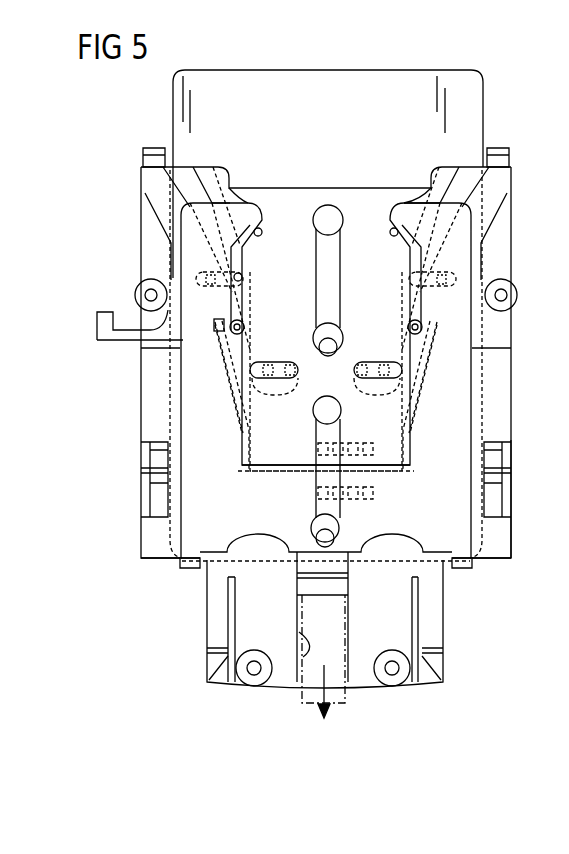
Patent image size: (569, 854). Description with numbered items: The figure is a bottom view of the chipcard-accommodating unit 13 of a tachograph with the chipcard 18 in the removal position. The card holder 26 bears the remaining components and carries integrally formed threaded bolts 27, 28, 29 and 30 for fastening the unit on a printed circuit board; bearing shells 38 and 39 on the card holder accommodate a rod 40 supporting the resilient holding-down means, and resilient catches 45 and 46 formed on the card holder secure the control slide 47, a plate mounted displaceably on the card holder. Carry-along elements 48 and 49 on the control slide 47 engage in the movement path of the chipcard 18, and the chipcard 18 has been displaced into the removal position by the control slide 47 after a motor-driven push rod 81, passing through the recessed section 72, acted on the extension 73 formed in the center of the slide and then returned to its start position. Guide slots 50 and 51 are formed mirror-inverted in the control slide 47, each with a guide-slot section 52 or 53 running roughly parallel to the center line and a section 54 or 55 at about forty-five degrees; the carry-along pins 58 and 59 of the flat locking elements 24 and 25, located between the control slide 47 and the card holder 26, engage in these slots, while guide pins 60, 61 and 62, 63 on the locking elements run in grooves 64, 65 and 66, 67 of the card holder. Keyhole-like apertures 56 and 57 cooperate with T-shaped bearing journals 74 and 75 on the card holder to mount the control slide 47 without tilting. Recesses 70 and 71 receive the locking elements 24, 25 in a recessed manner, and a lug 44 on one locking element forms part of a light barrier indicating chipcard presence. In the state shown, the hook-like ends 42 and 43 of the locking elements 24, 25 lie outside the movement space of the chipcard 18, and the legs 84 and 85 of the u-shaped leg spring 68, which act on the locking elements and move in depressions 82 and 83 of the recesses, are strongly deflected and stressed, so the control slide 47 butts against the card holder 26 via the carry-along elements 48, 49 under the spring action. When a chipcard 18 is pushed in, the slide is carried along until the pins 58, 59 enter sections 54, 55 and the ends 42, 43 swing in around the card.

The chipcard-accommodating unit 13 is at (103, 583).
The chipcard 18 is at (369, 113).
The locking element 24 is at (163, 188).
The locking element 25 is at (492, 192).
The card holder 26 is at (249, 195).
The threaded bolt 27 is at (137, 303).
The threaded bolt 28 is at (512, 300).
The threaded bolt 29 is at (390, 675).
The threaded bolt 30 is at (255, 675).
The bearing shell 38 is at (155, 505).
The bearing shell 39 is at (510, 520).
The rod 40 is at (505, 488).
The hook-like end 42 is at (152, 150).
The hook-like end 43 is at (500, 152).
The lug 44 is at (105, 333).
The catch 45 is at (218, 668).
The catch 46 is at (432, 668).
The control slide 47 is at (443, 494).
The carry-along element 48 is at (190, 568).
The carry-along element 49 is at (460, 568).
The guide slot 50 is at (262, 190).
The guide slot 51 is at (386, 196).
The guide-slot section 52 is at (218, 331).
The guide-slot section 53 is at (413, 276).
The guide-slot section 54 is at (263, 236).
The guide-slot section 55 is at (400, 244).
The keyhole-like aperture 56 is at (322, 205).
The keyhole-like aperture 57 is at (316, 478).
The carry-along pin 58 is at (245, 327).
The carry-along pin 59 is at (407, 320).
The guide pin 60 is at (214, 262).
The guide pin 61 is at (270, 379).
The guide pin 62 is at (427, 267).
The guide pin 63 is at (385, 380).
The groove 64 is at (242, 273).
The groove 65 is at (293, 380).
The groove 66 is at (433, 264).
The groove 67 is at (360, 379).
The leg spring 68 is at (290, 463).
The recess 70 is at (158, 220).
The recess 71 is at (505, 228).
The recessed section 72 is at (302, 645).
The extension 73 is at (328, 595).
The T-shaped bearing journal 74 is at (330, 342).
The T-shaped bearing journal 75 is at (338, 529).
The push rod 81 is at (350, 667).
The depression 82 is at (215, 322).
The depression 83 is at (424, 344).
The leg 84 is at (229, 385).
The leg 85 is at (428, 376).